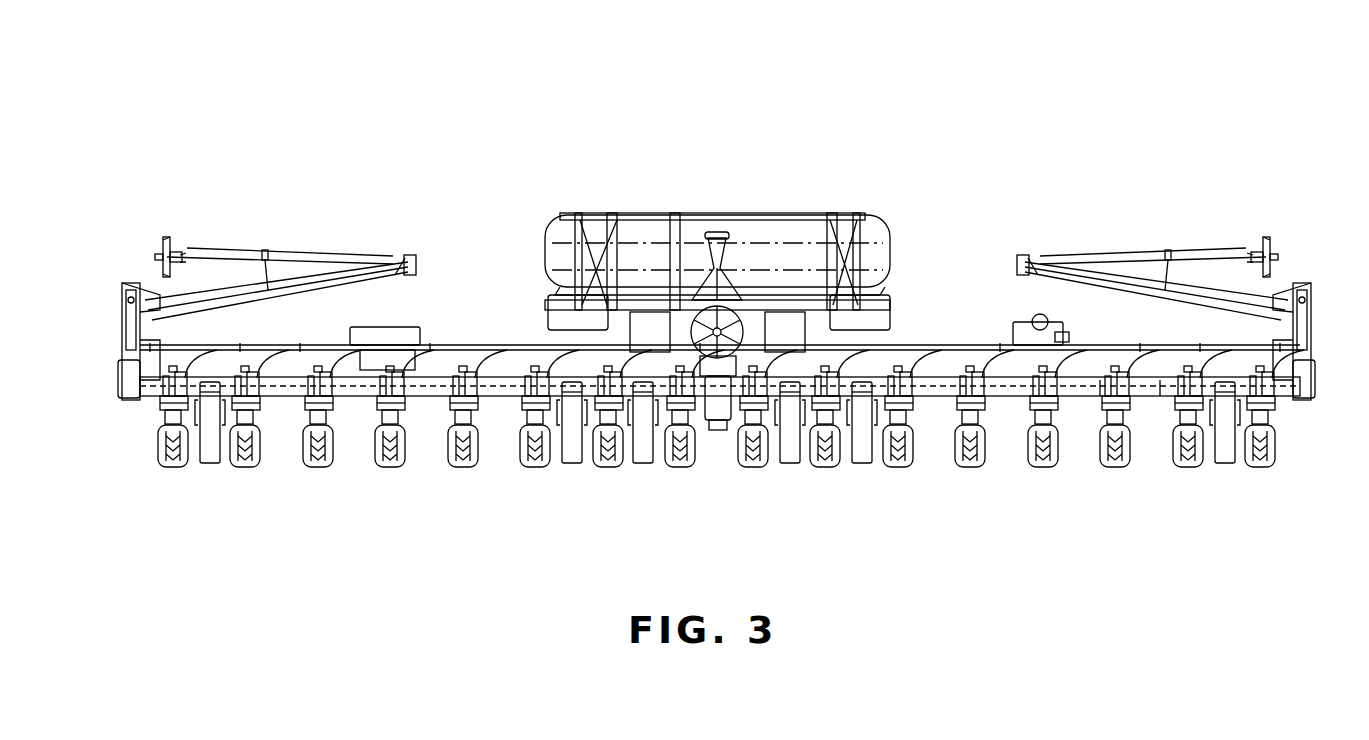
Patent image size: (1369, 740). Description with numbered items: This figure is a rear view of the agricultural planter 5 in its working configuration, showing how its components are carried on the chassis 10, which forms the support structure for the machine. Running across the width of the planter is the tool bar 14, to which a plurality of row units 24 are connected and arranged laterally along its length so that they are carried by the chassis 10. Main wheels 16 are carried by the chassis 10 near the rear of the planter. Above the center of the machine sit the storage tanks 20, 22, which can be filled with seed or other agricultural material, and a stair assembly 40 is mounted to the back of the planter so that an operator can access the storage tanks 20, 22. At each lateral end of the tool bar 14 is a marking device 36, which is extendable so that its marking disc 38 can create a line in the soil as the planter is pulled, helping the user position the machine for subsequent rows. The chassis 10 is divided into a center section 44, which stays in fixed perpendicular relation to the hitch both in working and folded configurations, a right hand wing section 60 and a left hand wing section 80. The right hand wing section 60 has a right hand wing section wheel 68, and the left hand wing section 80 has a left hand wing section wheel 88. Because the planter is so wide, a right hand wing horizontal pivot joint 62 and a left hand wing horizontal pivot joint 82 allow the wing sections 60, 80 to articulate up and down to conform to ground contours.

The agricultural planter 5 is at (843, 101).
The chassis 10 is at (905, 345).
The tool bar 14 is at (562, 350).
The main wheels 16 is at (857, 466).
The storage tank 20 is at (620, 215).
The storage tank 22 is at (873, 218).
The row units 24 is at (318, 470).
The marking device 36 is at (318, 262).
The marking disc 38 is at (166, 237).
The stair assembly 40 is at (706, 215).
The center section 44 is at (868, 335).
The right hand wing section 60 is at (1153, 395).
The right hand wing horizontal pivot joint 62 is at (937, 397).
The right hand wing section wheel 68 is at (1225, 466).
The left hand wing section 80 is at (423, 397).
The left hand wing horizontal pivot joint 82 is at (502, 402).
The left hand wing section wheel 88 is at (210, 465).